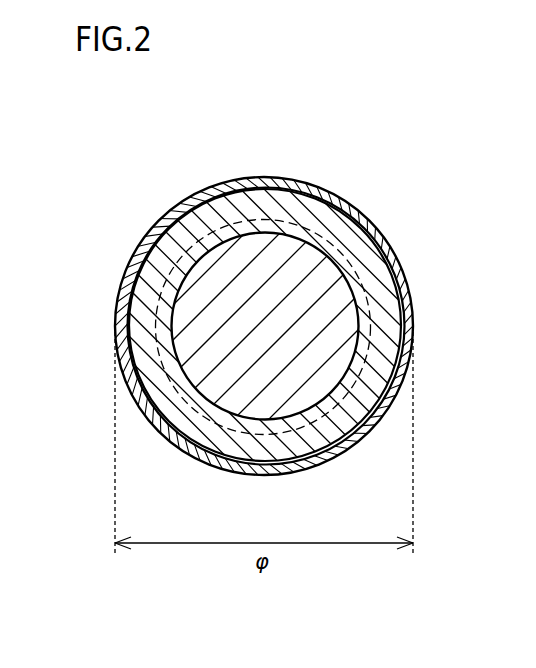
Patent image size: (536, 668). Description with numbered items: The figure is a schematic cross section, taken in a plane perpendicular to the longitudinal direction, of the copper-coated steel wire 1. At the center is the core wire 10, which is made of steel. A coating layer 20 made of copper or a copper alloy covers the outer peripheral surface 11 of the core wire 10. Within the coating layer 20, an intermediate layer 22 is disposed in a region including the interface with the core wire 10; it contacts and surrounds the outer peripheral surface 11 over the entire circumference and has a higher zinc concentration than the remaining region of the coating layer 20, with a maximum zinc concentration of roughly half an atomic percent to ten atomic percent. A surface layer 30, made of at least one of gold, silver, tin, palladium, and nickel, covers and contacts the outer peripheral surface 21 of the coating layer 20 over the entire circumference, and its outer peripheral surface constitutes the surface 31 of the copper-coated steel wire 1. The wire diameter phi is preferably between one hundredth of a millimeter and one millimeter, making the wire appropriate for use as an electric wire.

The copper-coated steel wire 1 is at (362, 155).
The core wire 10 is at (333, 301).
The outer peripheral surface of the core wire 11 is at (357, 316).
The coating layer 20 is at (360, 248).
The outer peripheral surface of the coating layer 21 is at (357, 223).
The intermediate layer 22 is at (245, 225).
The surface layer 30 is at (265, 468).
The surface 31 is at (313, 467).